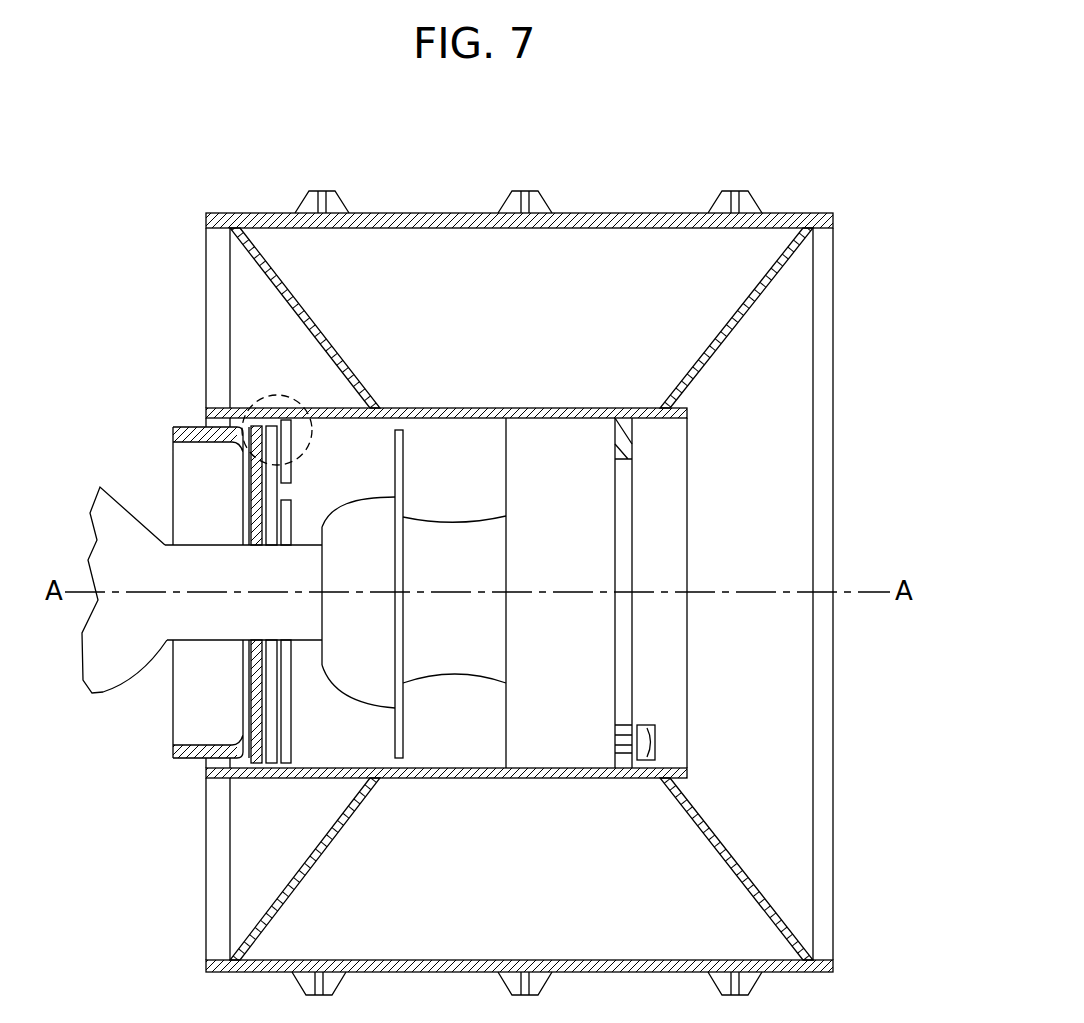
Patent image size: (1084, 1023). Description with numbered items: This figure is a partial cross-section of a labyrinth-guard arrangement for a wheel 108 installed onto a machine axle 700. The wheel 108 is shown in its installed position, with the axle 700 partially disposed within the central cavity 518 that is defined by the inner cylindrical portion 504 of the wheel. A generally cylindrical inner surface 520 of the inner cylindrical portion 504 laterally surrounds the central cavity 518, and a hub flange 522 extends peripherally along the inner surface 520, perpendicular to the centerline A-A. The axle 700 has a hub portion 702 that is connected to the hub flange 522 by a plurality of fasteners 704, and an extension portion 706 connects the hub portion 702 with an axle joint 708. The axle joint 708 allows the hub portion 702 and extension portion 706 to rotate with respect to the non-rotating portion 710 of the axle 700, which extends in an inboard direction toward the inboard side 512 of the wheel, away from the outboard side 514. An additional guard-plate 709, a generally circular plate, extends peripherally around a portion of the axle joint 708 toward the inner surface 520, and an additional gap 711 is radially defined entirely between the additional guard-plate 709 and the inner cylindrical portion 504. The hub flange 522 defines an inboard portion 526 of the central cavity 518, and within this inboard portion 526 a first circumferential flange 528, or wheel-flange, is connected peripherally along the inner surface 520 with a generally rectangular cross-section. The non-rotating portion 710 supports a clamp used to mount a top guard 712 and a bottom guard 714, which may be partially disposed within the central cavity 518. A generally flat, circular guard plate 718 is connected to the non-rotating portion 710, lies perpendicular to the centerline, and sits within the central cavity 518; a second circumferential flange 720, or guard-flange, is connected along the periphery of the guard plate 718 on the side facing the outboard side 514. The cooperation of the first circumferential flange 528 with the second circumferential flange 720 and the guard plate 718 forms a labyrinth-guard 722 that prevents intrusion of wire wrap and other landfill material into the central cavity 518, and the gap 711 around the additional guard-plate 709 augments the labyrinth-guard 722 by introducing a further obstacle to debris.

The wheel 108 is at (805, 130).
The inner cylindrical portion 504 is at (615, 432).
The inboard side 512 is at (170, 313).
The outboard side 514 is at (853, 287).
The central cavity 518 is at (420, 437).
The inner surface 520 is at (443, 420).
The hub flange 522 is at (632, 440).
The inboard portion 526 is at (364, 458).
The first circumferential flange 528 is at (282, 756).
The axle 700 is at (90, 523).
The hub portion 702 is at (578, 548).
The fasteners 704 is at (655, 742).
The extension portion 706 is at (478, 568).
The axle joint 708 is at (386, 561).
The additional guard-plate 709 is at (383, 698).
The non-rotating portion 710 is at (153, 644).
The additional gap 711 is at (407, 762).
The top guard 712 is at (195, 480).
The bottom guard 714 is at (178, 758).
The guard plate 718 is at (252, 675).
The second circumferential flange 720 is at (262, 758).
The labyrinth-guard 722 is at (275, 398).